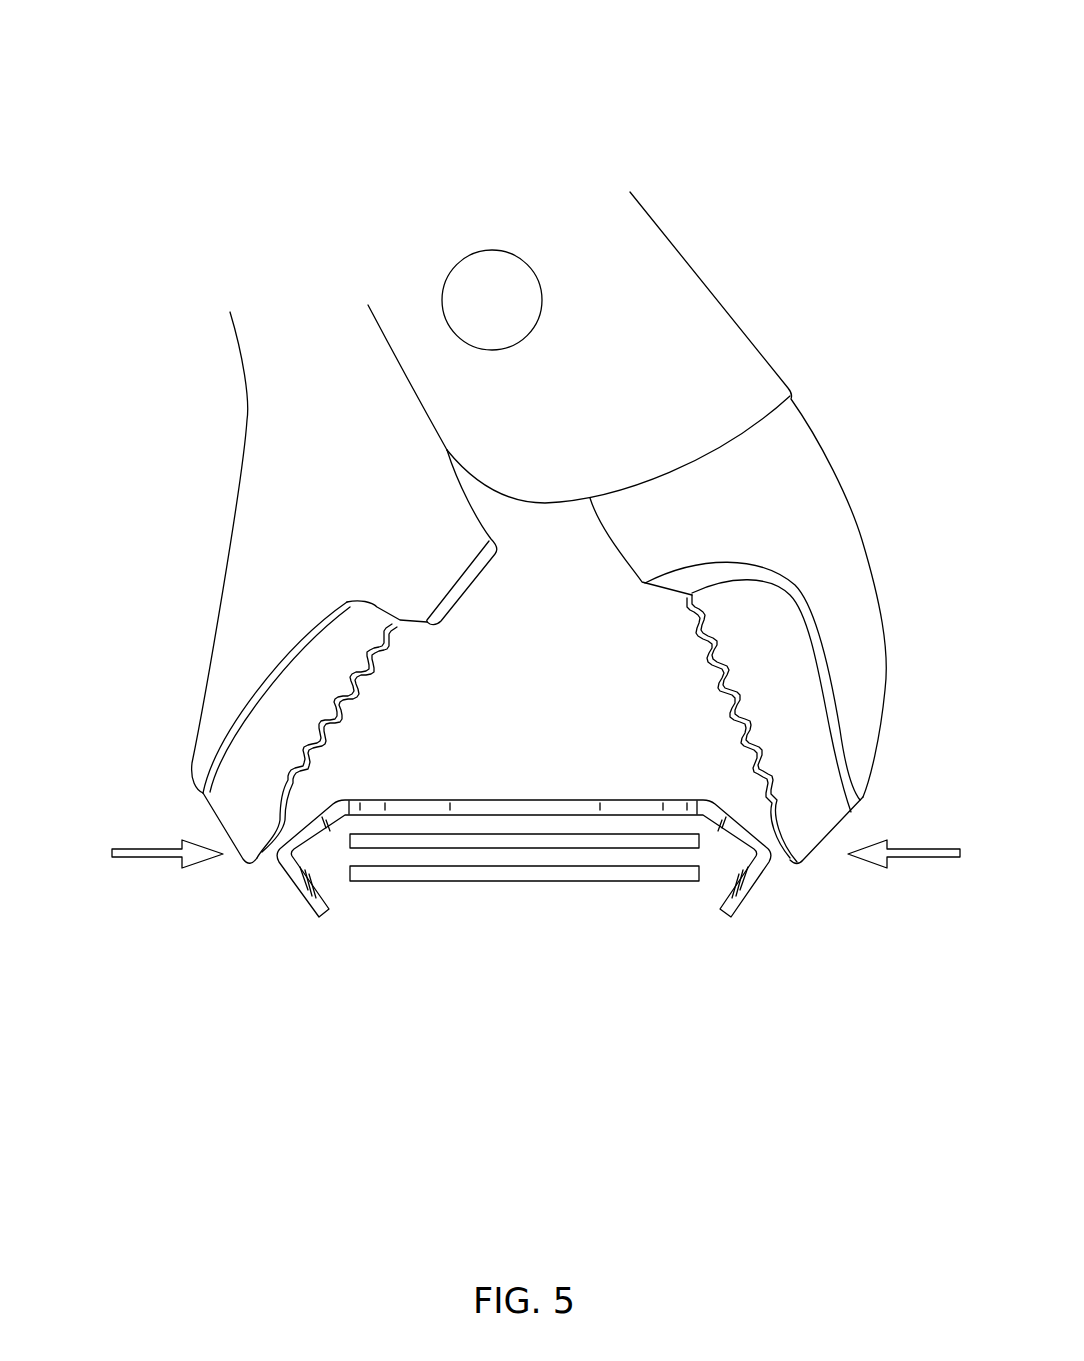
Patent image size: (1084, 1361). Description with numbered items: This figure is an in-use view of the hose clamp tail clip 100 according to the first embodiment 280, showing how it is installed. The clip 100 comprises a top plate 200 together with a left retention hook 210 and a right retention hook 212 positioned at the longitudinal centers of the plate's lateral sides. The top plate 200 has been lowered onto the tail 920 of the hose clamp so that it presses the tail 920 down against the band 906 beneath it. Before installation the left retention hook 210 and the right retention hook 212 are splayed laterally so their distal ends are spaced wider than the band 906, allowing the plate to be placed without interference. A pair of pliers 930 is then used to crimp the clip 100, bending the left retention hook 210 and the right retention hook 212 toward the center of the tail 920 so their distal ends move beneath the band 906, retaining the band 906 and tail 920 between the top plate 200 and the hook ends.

The hose clamp tail clip 100 is at (120, 106).
The first embodiment 280 is at (561, 528).
The pair of pliers 930 is at (813, 482).
The top plate 200 is at (552, 805).
The right retention hook 212 is at (297, 890).
The left retention hook 210 is at (750, 893).
The tail 920 is at (432, 848).
The band 906 is at (645, 882).